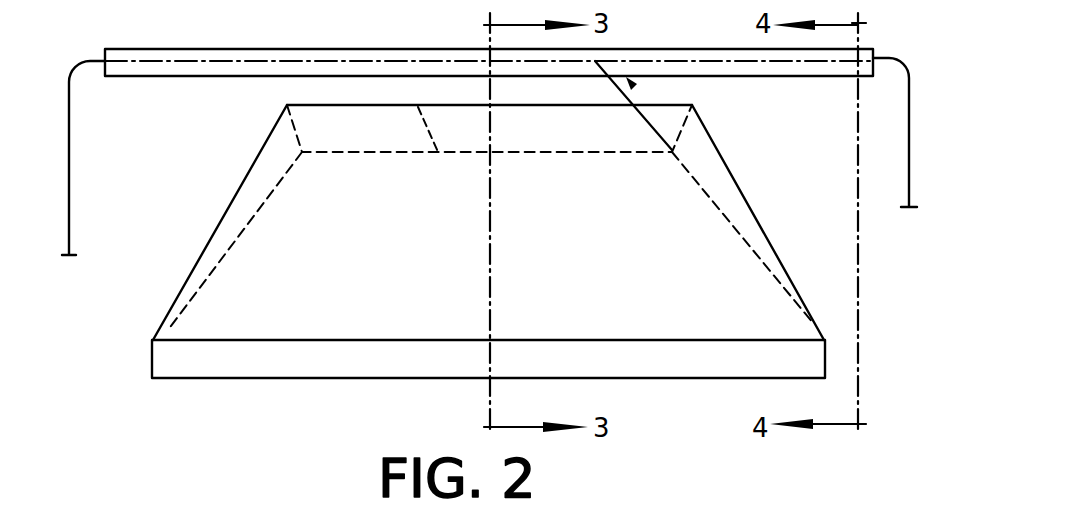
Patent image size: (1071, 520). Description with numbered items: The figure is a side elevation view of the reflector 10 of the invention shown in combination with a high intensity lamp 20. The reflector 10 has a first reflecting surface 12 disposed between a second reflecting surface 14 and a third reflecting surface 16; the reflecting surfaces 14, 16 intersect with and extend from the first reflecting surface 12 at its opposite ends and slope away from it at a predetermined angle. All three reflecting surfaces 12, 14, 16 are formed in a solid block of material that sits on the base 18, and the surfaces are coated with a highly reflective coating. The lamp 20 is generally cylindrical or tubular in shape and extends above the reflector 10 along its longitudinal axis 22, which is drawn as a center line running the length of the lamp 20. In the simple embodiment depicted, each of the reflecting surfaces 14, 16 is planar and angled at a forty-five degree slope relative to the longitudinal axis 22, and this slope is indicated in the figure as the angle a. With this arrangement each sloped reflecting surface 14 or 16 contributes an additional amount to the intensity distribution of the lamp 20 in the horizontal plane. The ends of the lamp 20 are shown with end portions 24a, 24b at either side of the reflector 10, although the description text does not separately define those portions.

The reflector 10 is at (600, 252).
The first reflecting surface 12 is at (418, 107).
The second reflecting surface 14 is at (233, 220).
The third reflecting surface 16 is at (743, 212).
The base 18 is at (292, 358).
The high intensity lamp 20 is at (636, 77).
The angle a is at (638, 89).
The longitudinal axis 22 is at (508, 42).
The right hook end of rod 24a is at (906, 175).
The left hook end of rod 24b is at (71, 186).